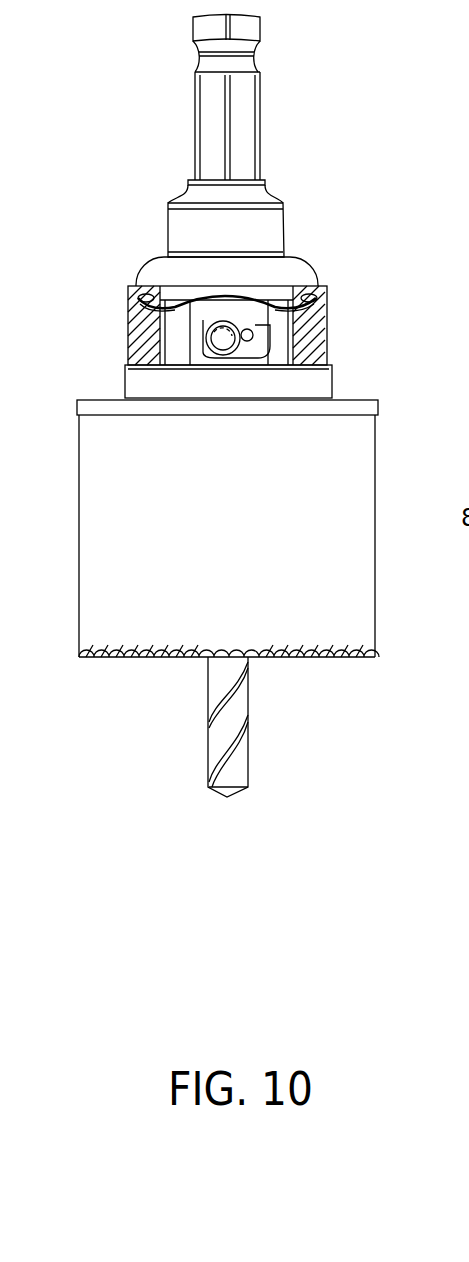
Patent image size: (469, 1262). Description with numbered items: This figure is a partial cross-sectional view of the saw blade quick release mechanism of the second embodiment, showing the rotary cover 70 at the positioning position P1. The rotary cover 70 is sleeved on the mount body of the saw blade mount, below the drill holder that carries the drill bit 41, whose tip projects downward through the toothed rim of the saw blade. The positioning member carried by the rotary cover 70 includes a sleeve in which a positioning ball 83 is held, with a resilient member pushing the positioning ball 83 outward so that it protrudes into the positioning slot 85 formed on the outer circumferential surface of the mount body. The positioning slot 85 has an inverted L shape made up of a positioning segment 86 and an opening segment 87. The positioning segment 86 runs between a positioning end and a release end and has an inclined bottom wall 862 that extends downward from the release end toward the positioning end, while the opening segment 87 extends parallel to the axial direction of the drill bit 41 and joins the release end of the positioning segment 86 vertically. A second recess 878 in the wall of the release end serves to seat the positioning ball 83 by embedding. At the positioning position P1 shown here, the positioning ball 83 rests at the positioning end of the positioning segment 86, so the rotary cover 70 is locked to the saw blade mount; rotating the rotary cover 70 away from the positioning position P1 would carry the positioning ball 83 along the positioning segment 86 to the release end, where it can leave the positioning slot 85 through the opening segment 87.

The drill bit 41 is at (235, 718).
The rotary cover 70 is at (135, 330).
The positioning ball 83 is at (207, 345).
The positioning slot 85 is at (297, 169).
The positioning segment 86 is at (205, 322).
The opening segment 87 is at (271, 238).
The second recess 878 is at (255, 350).
The inclined bottom wall 862 is at (233, 360).
The positioning position P1 is at (370, 315).